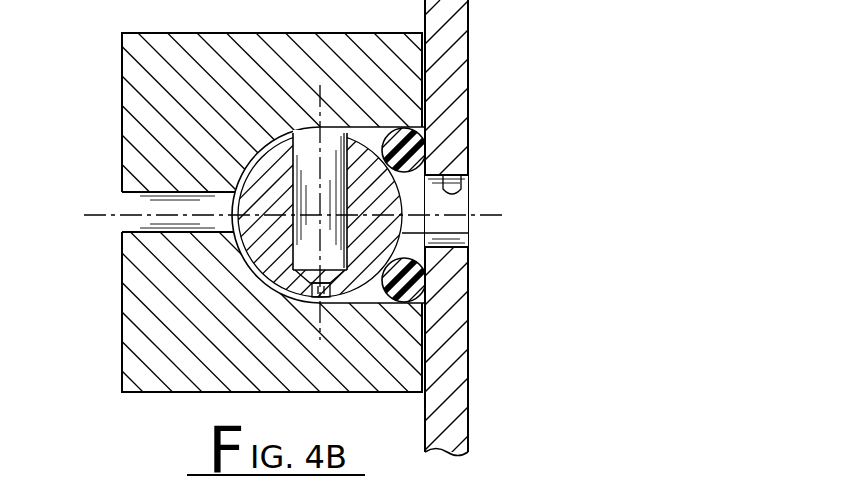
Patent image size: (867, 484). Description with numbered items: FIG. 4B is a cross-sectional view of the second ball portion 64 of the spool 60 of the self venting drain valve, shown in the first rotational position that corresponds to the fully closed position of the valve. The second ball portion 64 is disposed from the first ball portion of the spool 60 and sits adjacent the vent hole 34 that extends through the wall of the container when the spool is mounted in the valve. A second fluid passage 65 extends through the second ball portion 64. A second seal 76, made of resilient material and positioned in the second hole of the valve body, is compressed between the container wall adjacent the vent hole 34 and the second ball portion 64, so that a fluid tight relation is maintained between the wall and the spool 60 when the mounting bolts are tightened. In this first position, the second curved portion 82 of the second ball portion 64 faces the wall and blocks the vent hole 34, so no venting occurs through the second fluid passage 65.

The spool 60 is at (222, 249).
The second ball portion 64 is at (246, 176).
The second fluid passage 65 is at (297, 166).
The second seal 76 is at (400, 128).
The vent hole 34 is at (460, 186).
The second curved portion 82 is at (470, 236).